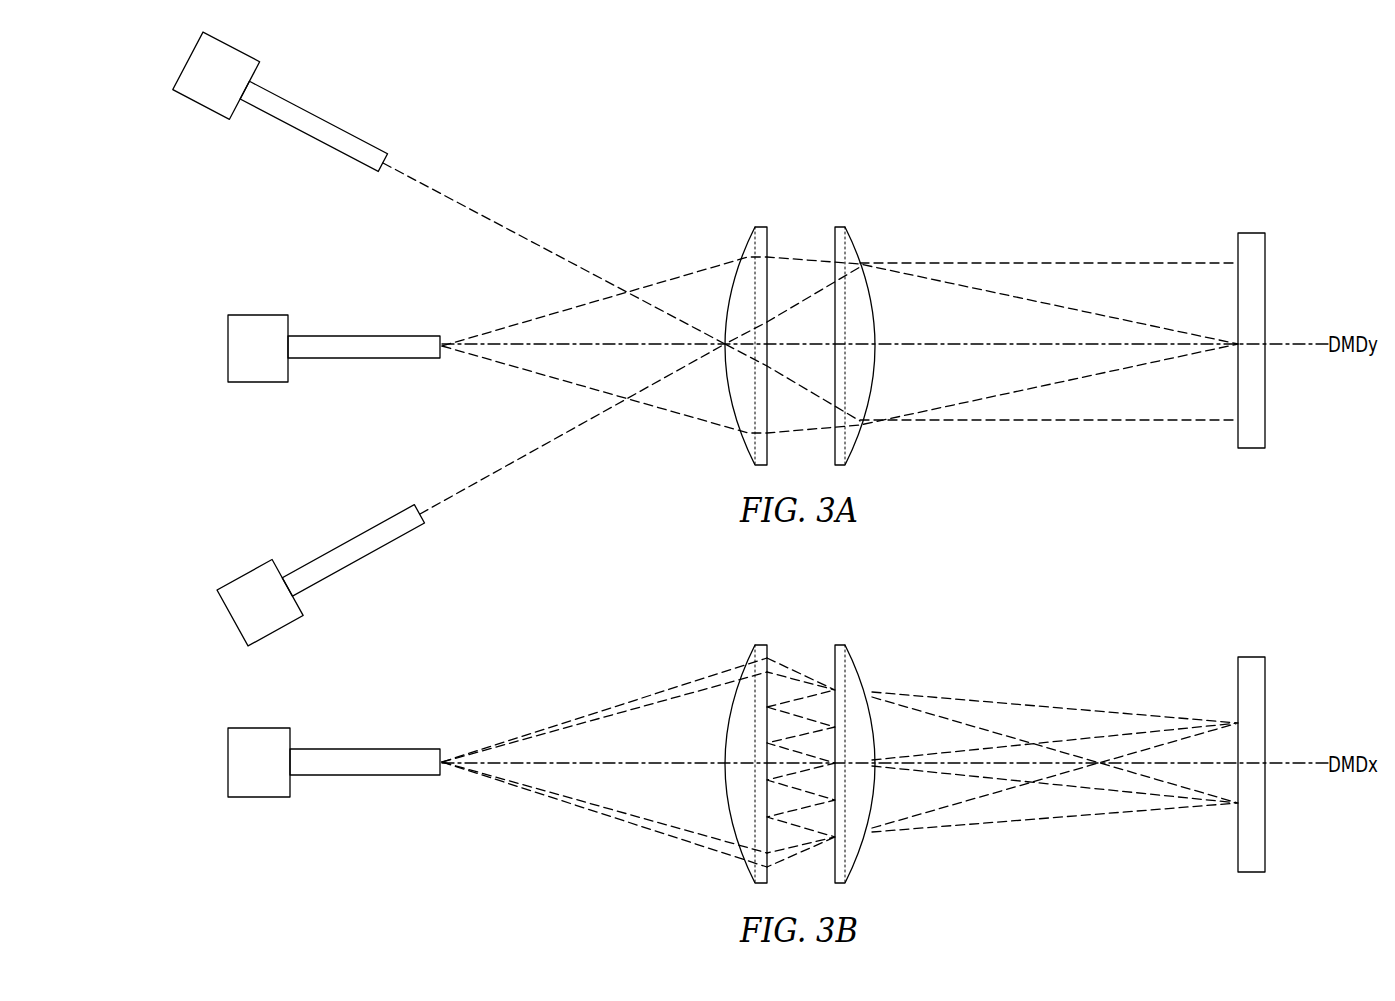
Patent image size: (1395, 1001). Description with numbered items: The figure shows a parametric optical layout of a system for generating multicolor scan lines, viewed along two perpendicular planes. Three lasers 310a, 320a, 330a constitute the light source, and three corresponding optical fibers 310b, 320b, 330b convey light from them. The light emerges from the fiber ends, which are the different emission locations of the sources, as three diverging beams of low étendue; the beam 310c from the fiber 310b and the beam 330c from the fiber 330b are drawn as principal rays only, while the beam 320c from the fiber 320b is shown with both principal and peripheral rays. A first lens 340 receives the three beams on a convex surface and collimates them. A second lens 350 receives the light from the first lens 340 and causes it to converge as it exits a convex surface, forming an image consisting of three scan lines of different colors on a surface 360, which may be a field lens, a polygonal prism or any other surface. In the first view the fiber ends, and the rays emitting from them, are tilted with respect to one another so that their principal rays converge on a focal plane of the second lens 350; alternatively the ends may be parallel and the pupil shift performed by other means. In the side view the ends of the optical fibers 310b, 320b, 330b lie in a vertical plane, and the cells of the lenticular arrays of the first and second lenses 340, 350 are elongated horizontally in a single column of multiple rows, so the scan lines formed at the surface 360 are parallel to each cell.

In FIG. 3A, the laser 310a is at (205, 108).
In FIG. 3B, the laser 310a is at (258, 727).
In FIG. 3A, the optical fiber 310b is at (338, 96).
In FIG. 3B, the optical fiber 310b is at (363, 748).
In FIG. 3A, the first light beam 310c is at (508, 228).
In FIG. 3A, the laser 320a is at (258, 315).
In FIG. 3A, the optical fiber 320b is at (363, 336).
In FIG. 3A, the second light beam 320c is at (495, 352).
In FIG. 3A, the laser 330a is at (243, 578).
In FIG. 3A, the optical fiber 330b is at (353, 564).
In FIG. 3A, the third light beam 330c is at (455, 487).
In FIG. 3A, the first lens 340 is at (757, 225).
In FIG. 3B, the first lens 340 is at (757, 645).
In FIG. 3A, the second lens 350 is at (838, 225).
In FIG. 3B, the second lens 350 is at (838, 645).
In FIG. 3A, the surface 360 is at (1252, 233).
In FIG. 3B, the surface 360 is at (1252, 657).